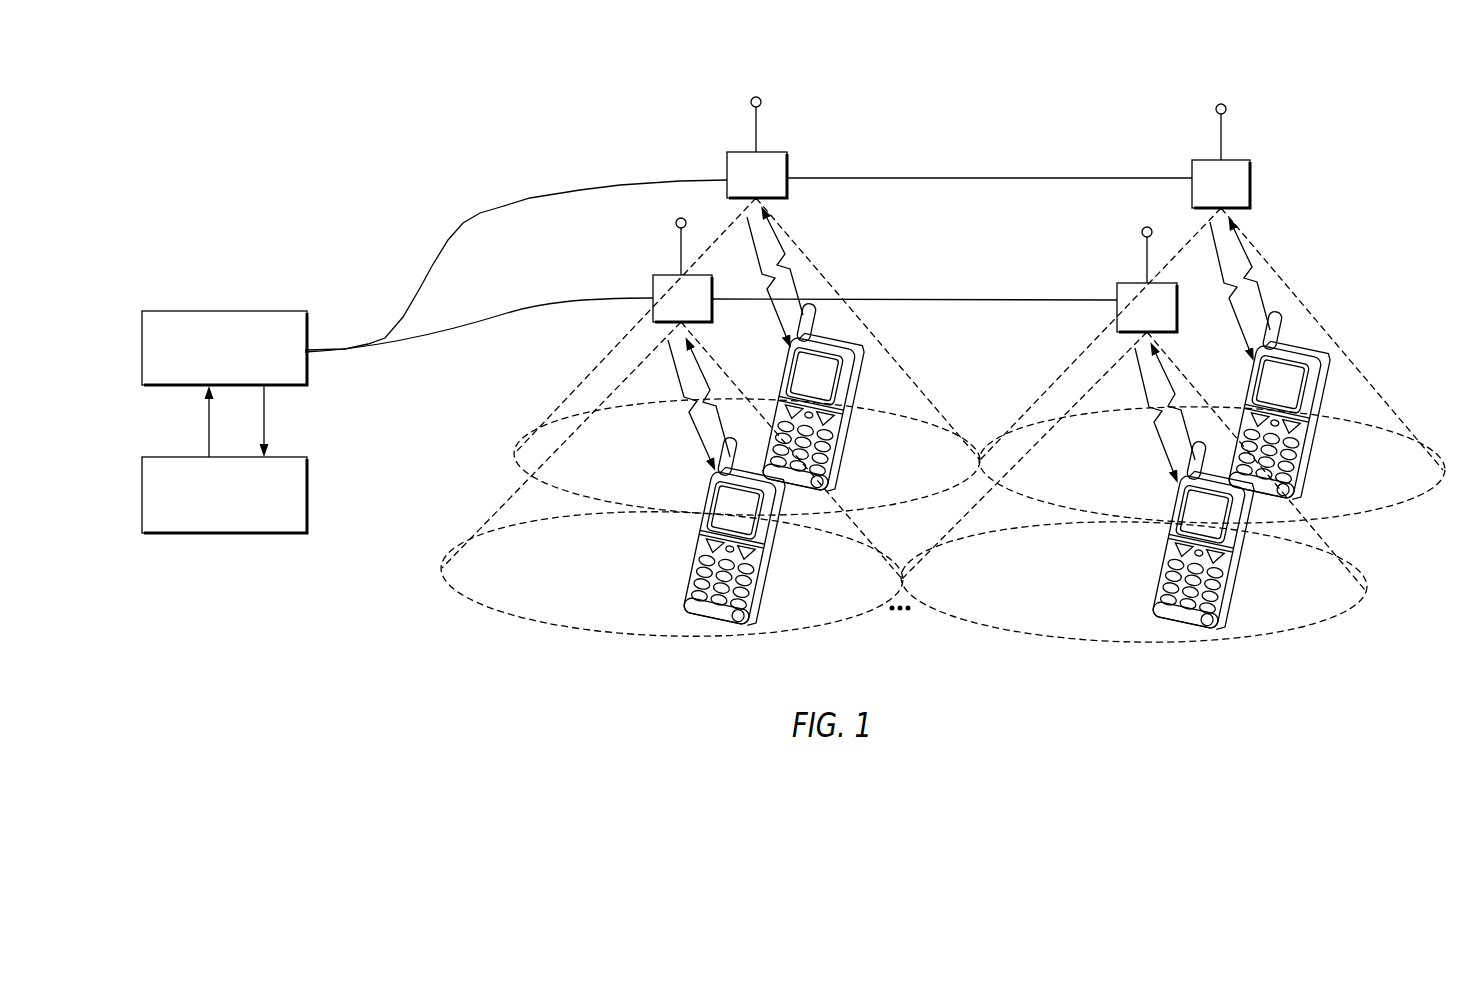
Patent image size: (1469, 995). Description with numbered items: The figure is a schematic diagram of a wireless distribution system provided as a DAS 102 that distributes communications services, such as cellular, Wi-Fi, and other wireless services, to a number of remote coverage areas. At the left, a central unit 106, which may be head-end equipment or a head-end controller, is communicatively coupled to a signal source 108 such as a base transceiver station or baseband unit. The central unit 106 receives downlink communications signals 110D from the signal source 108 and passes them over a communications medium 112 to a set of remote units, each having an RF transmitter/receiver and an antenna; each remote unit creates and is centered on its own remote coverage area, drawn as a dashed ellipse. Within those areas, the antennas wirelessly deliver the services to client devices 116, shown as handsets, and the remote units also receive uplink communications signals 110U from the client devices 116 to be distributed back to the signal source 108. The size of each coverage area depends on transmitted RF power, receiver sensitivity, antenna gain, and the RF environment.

The DAS 102 is at (961, 120).
The central unit 106 is at (240, 366).
The signal source 108 is at (240, 514).
The downlink communications signals 110D is at (208, 432).
The uplink communications signals 110U is at (267, 433).
The communications medium 112 is at (545, 193).
The client device 116 is at (860, 388).